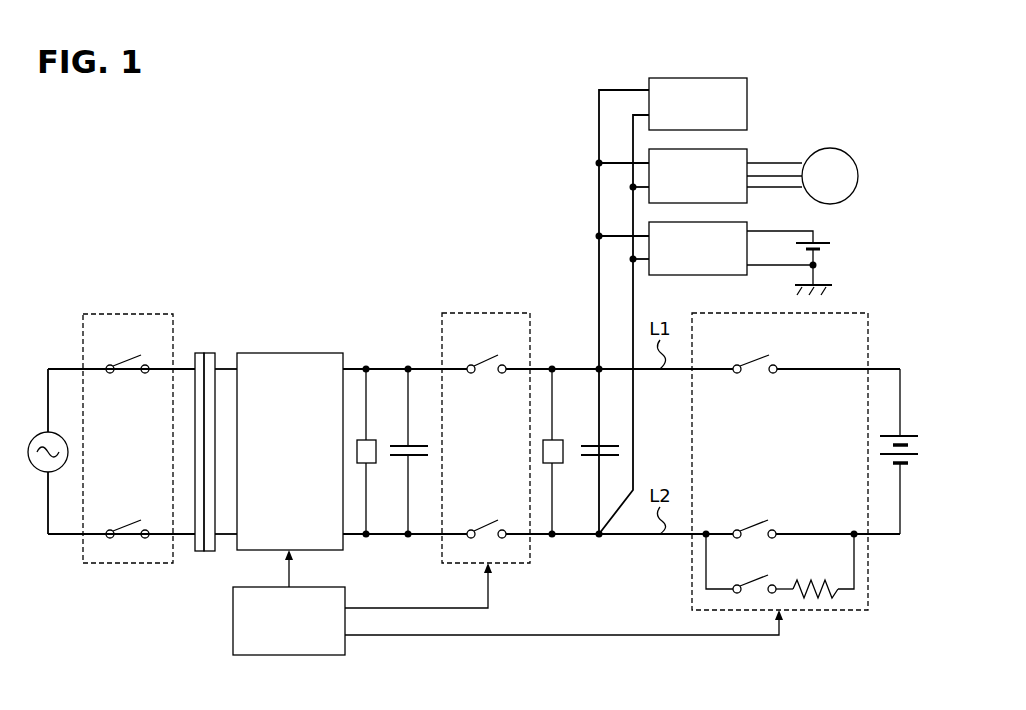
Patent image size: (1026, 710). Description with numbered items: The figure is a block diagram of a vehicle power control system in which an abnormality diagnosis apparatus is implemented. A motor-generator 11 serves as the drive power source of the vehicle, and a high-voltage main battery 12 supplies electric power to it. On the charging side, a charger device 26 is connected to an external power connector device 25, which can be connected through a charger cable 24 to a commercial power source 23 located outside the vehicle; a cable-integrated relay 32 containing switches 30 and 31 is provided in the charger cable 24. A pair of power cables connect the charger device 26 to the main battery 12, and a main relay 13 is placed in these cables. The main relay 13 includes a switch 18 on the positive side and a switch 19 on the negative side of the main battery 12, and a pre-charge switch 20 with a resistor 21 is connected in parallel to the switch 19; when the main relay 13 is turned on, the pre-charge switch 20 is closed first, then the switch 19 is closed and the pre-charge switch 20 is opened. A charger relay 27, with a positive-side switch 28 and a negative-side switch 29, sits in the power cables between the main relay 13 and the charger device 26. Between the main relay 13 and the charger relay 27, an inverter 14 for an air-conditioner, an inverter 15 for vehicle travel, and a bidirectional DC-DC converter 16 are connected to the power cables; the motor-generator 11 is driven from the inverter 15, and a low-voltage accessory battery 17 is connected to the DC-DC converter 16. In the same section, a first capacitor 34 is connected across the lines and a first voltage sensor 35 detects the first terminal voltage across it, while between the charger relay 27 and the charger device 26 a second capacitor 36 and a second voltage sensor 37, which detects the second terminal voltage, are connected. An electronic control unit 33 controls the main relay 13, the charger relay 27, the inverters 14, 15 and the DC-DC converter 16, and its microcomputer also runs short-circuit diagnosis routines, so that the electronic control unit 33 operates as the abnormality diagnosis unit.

The motor-generator 11 is at (845, 152).
The main battery 12 is at (903, 435).
The main relay 13 is at (830, 313).
The inverter for an air-conditioner 14 is at (725, 78).
The inverter for vehicle travel 15 is at (725, 150).
The bidirectional DC-DC converter 16 is at (725, 223).
The accessory battery 17 is at (830, 243).
The switch 18 is at (757, 362).
The switch 19 is at (757, 527).
The pre-charge switch 20 is at (750, 581).
The resistor 21 is at (814, 588).
The commercial power source 23 is at (45, 434).
The charger cable 24 is at (65, 369).
The external power connector device 25 is at (206, 350).
The charger device 26 is at (290, 350).
The charger relay 27 is at (488, 313).
The switch 28 is at (487, 362).
The switch 29 is at (487, 527).
The switch 30 is at (127, 362).
The switch 31 is at (127, 527).
The cable-integrated relay 32 is at (135, 314).
The electronic control unit 33 is at (233, 620).
The first capacitor 34 is at (604, 446).
The first voltage sensor 35 is at (555, 440).
The second capacitor 36 is at (412, 446).
The second voltage sensor 37 is at (369, 440).